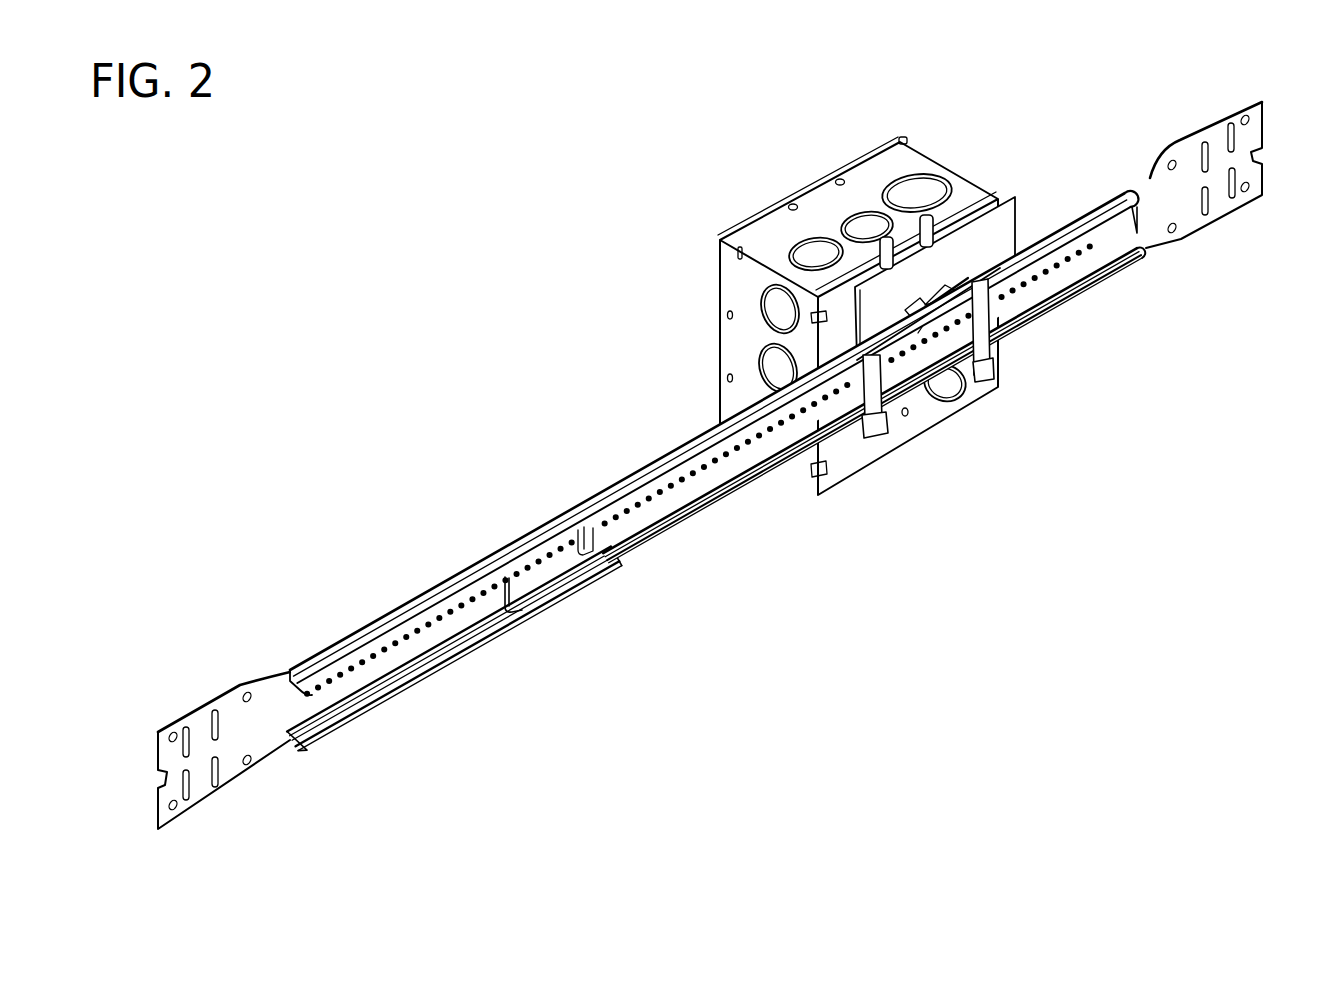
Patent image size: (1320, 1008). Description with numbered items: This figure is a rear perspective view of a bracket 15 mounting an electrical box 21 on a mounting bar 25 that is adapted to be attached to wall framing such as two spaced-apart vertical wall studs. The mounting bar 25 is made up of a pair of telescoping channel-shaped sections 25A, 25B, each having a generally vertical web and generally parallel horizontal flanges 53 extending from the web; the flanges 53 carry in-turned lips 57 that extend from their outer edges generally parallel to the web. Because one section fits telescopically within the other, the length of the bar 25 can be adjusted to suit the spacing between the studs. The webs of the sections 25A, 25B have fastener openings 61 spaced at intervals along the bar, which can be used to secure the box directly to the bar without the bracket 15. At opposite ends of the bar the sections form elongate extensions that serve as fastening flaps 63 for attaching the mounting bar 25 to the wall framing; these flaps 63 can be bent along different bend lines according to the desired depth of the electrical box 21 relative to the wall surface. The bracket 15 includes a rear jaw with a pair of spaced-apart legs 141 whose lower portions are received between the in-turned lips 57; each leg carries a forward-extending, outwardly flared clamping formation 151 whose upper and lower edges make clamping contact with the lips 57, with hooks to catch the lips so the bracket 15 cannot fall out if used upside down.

The electrical box 21 is at (797, 192).
The bracket 15 is at (1011, 190).
The mounting bar 25 is at (719, 470).
The channel-shaped section 25A is at (412, 653).
The channel-shaped section 25B is at (662, 500).
The horizontal flange 53 is at (543, 528).
The in-turned lip 57 is at (1140, 180).
The fastener opening 61 is at (544, 565).
The fastening flap 63 is at (1208, 222).
The leg 141 is at (1006, 340).
The clamping formation 151 is at (857, 412).